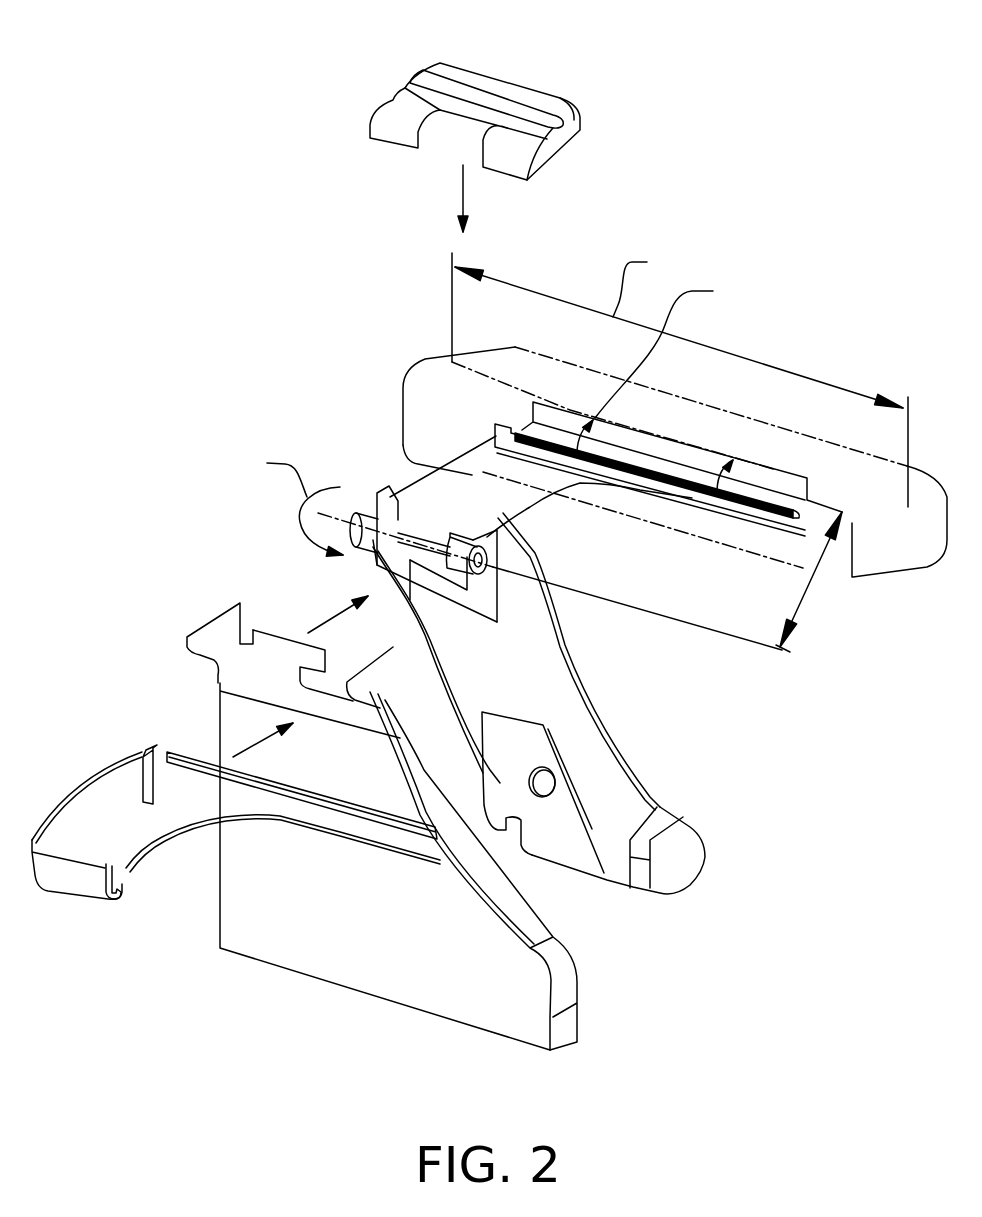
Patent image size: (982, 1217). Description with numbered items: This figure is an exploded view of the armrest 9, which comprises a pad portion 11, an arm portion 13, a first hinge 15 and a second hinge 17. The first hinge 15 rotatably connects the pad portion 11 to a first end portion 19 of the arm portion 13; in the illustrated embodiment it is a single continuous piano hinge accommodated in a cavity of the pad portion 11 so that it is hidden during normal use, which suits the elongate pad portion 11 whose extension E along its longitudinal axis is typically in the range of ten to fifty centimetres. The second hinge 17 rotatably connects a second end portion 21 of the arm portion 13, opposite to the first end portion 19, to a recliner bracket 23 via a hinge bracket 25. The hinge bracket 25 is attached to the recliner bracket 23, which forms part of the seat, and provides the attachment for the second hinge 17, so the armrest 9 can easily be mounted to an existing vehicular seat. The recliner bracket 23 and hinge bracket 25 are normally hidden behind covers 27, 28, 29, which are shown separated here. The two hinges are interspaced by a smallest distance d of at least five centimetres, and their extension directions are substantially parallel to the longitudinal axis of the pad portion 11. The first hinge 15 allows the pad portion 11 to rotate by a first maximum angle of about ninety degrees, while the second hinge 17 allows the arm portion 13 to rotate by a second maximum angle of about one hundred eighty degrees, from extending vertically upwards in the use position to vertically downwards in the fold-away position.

The armrest 9 is at (243, 303).
The pad portion 11 is at (800, 460).
The arm portion 13 is at (445, 491).
The first hinge 15 is at (375, 350).
The second hinge 17 is at (356, 512).
The first end portion 19 is at (513, 430).
The second end portion 21 is at (392, 595).
The recliner bracket 23 is at (593, 758).
The hinge bracket 25 is at (487, 593).
The cover 27 is at (357, 935).
The cover 28 is at (143, 832).
The cover 29 is at (492, 88).